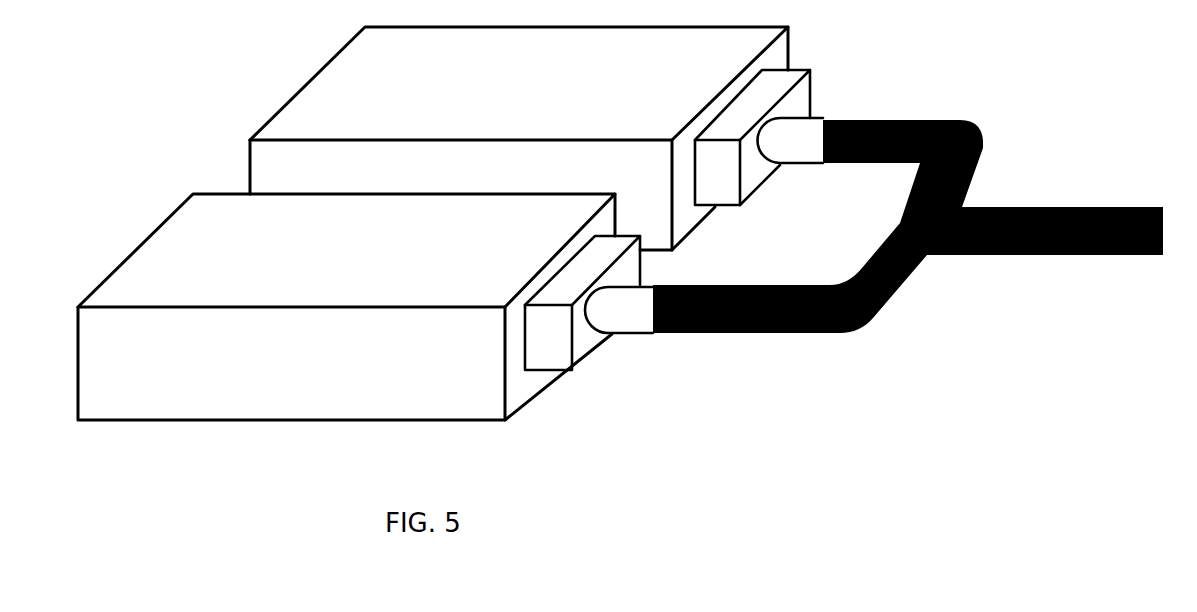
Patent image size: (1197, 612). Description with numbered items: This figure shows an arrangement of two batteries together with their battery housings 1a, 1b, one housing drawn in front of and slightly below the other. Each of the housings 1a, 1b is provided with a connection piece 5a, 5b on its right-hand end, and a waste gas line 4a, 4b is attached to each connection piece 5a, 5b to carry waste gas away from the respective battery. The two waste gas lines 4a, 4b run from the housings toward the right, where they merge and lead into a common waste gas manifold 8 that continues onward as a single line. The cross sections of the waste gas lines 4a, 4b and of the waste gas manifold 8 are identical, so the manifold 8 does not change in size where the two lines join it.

The battery housing 1a is at (346, 307).
The battery housing 1b is at (519, 138).
The waste gas line 4a is at (737, 335).
The waste gas line 4b is at (974, 104).
The connection piece 5a is at (588, 354).
The connection piece 5b is at (806, 100).
The waste gas manifold 8 is at (1058, 265).